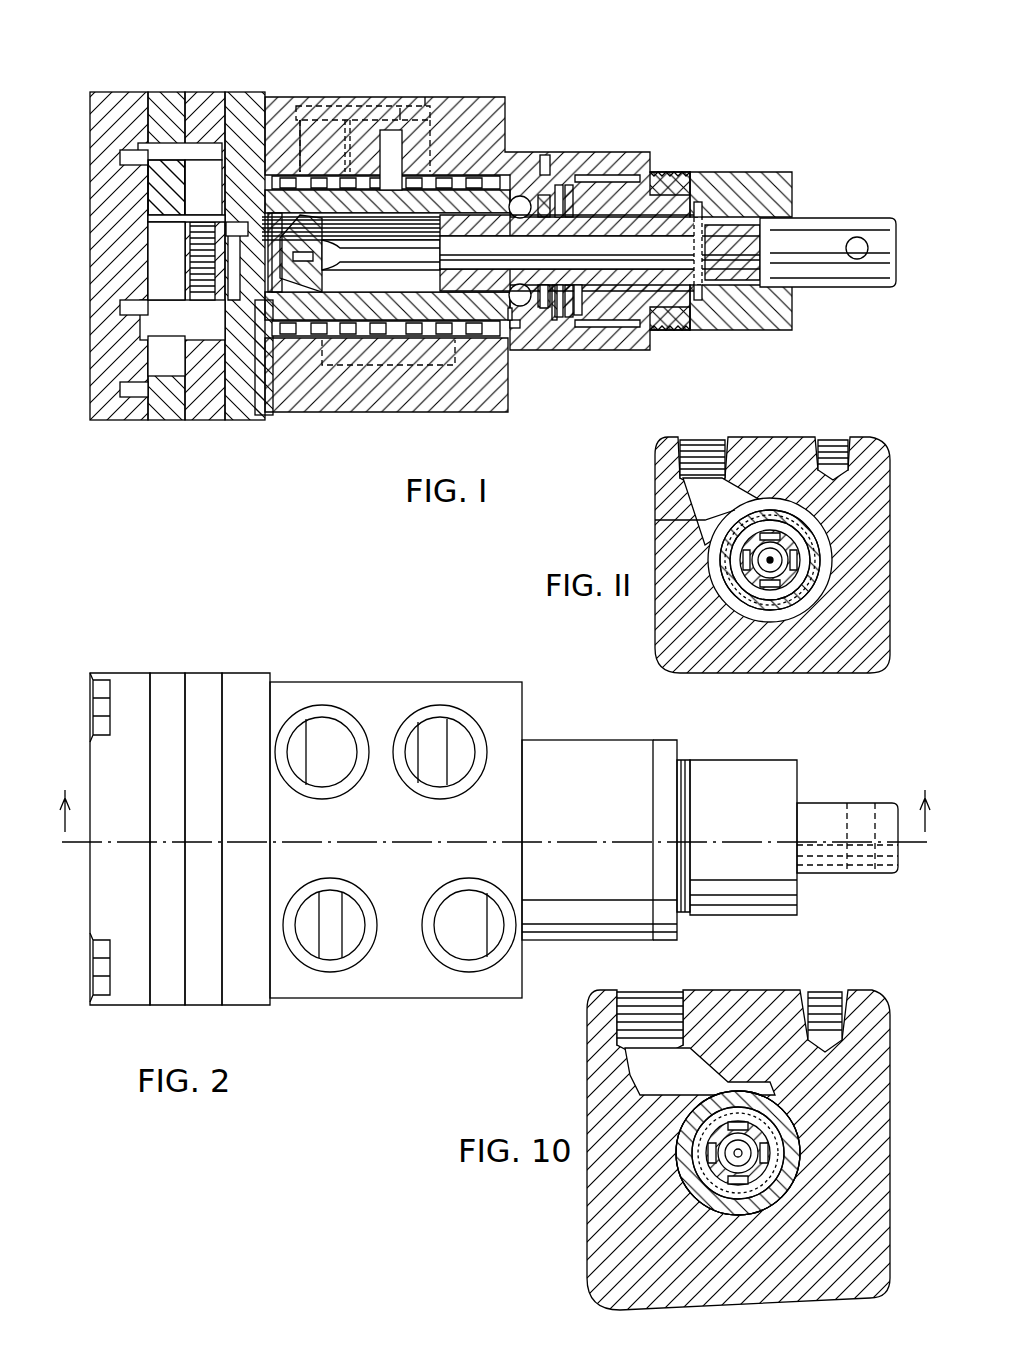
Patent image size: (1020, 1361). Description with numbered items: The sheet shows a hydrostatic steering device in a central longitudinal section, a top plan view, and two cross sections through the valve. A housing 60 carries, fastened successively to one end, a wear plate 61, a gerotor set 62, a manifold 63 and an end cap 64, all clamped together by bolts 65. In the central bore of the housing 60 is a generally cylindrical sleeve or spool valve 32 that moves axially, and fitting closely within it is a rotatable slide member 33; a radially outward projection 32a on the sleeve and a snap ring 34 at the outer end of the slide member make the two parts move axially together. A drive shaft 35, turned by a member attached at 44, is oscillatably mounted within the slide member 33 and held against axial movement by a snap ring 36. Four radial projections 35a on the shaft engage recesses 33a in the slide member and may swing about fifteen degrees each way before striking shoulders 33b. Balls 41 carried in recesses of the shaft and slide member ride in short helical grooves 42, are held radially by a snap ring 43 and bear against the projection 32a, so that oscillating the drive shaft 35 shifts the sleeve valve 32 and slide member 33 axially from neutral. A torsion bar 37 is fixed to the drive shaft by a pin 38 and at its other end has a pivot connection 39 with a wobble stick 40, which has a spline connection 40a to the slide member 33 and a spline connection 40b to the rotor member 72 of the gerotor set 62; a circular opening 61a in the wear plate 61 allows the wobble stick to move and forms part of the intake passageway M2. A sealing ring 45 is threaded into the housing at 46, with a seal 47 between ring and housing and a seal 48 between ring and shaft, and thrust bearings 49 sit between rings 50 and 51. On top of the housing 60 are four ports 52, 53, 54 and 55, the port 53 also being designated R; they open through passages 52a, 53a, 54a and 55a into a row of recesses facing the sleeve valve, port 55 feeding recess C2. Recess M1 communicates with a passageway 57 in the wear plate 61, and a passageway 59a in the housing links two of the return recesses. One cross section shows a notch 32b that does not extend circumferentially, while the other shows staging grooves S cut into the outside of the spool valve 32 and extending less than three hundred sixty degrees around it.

In FIG. 1, the sleeve or spool valve 32 is at (500, 215).
In FIG. 11, the sleeve or spool valve 32 is at (762, 608).
In FIG. 10, the sleeve or spool valve 32 is at (700, 1198).
In FIG. 1, the radially outward projection 32a is at (544, 195).
In FIG. 11, the notch 32b is at (778, 500).
In FIG. 10, the notch 32b is at (740, 1080).
In FIG. 1, the slide member 33 is at (486, 125).
In FIG. 11, the slide member 33 is at (792, 578).
In FIG. 10, the slide member 33 is at (760, 1175).
In FIG. 11, the recesses 33a is at (782, 563).
In FIG. 10, the recesses 33a is at (752, 1155).
In FIG. 11, the shoulders 33b is at (793, 554).
In FIG. 10, the shoulders 33b is at (765, 1138).
In FIG. 1, the snap ring 34 is at (276, 292).
In FIG. 1, the drive shaft 35 is at (705, 240).
In FIG. 11, the drive shaft 35 is at (800, 592).
In FIG. 2, the drive shaft 35 is at (812, 815).
In FIG. 10, the drive shaft 35 is at (752, 1210).
In FIG. 11, the radially outwardly extending projections 35a is at (812, 545).
In FIG. 10, the radially outwardly extending projections 35a is at (760, 1115).
In FIG. 1, the snap ring 36 is at (532, 207).
In FIG. 1, the torsion bar 37 is at (630, 180).
In FIG. 11, the torsion bar 37 is at (730, 598).
In FIG. 10, the torsion bar 37 is at (700, 1170).
In FIG. 1, the pin 38 is at (720, 282).
In FIG. 1, the pivot connection 39 is at (284, 262).
In FIG. 1, the wobble stick 40 is at (236, 300).
In FIG. 1, the spline connection 40a is at (330, 350).
In FIG. 1, the spline connection 40b is at (160, 268).
In FIG. 1, the balls 41 is at (516, 323).
In FIG. 1, the helical grooves 42 is at (512, 320).
In FIG. 1, the snap ring 43 is at (545, 310).
In FIG. 1, the attachment location 44 is at (852, 248).
In FIG. 1, the sealing ring 45 is at (748, 195).
In FIG. 2, the sealing ring 45 is at (722, 768).
In FIG. 1, the threaded connection 46 is at (668, 172).
In FIG. 2, the threaded connection 46 is at (683, 760).
In FIG. 1, the seal 47 is at (600, 185).
In FIG. 1, the seal 48 is at (700, 205).
In FIG. 1, the thrust bearings 49 is at (560, 190).
In FIG. 1, the ring 50 is at (555, 320).
In FIG. 1, the ring 51 is at (580, 318).
In FIG. 2, the port opening 52 is at (340, 782).
In FIG. 1, the port passage 52a is at (300, 106).
In FIG. 2, the port passage 52a is at (296, 748).
In FIG. 2, the port opening 53 is at (352, 898).
In FIG. 1, the port passage 53a is at (348, 125).
In FIG. 2, the port passage 53a is at (330, 906).
In FIG. 1, the port opening 54 is at (400, 104).
In FIG. 11, the port opening 54 is at (705, 442).
In FIG. 2, the port opening 54 is at (460, 782).
In FIG. 10, the port opening 54 is at (636, 1000).
In FIG. 1, the port passage 54a is at (390, 150).
In FIG. 11, the port passage 54a is at (730, 500).
In FIG. 2, the port passage 54a is at (430, 732).
In FIG. 10, the port passage 54a is at (685, 1065).
In FIG. 1, the port opening 55 is at (427, 98).
In FIG. 11, the port opening 55 is at (836, 440).
In FIG. 2, the port opening 55 is at (470, 905).
In FIG. 10, the port opening 55 is at (815, 1000).
In FIG. 1, the port passage 55a is at (545, 152).
In FIG. 2, the port passage 55a is at (498, 918).
In FIG. 1, the passageway 57 is at (240, 185).
In FIG. 1, the passageway 59a is at (388, 412).
In FIG. 1, the housing 60 is at (365, 97).
In FIG. 11, the housing 60 is at (888, 533).
In FIG. 2, the housing 60 is at (522, 722).
In FIG. 10, the housing 60 is at (880, 1082).
In FIG. 1, the wear plate 61 is at (240, 92).
In FIG. 2, the wear plate 61 is at (248, 1005).
In FIG. 1, the circular opening 61a is at (265, 418).
In FIG. 1, the gerotor set 62 is at (205, 92).
In FIG. 2, the gerotor set 62 is at (206, 1005).
In FIG. 1, the manifold 63 is at (166, 92).
In FIG. 2, the manifold 63 is at (168, 1005).
In FIG. 1, the end cap 64 is at (110, 92).
In FIG. 2, the end cap 64 is at (126, 1005).
In FIG. 2, the bolts 65 is at (92, 715).
In FIG. 1, the rotor member 72 is at (192, 236).
In FIG. 1, the recess M1 is at (268, 58).
In FIG. 1, the intake passageway M2 is at (237, 229).
In FIG. 1, the return port designation R is at (296, 106).
In FIG. 1, the recess C2 is at (436, 106).
In FIG. 11, the staging grooves S is at (655, 520).